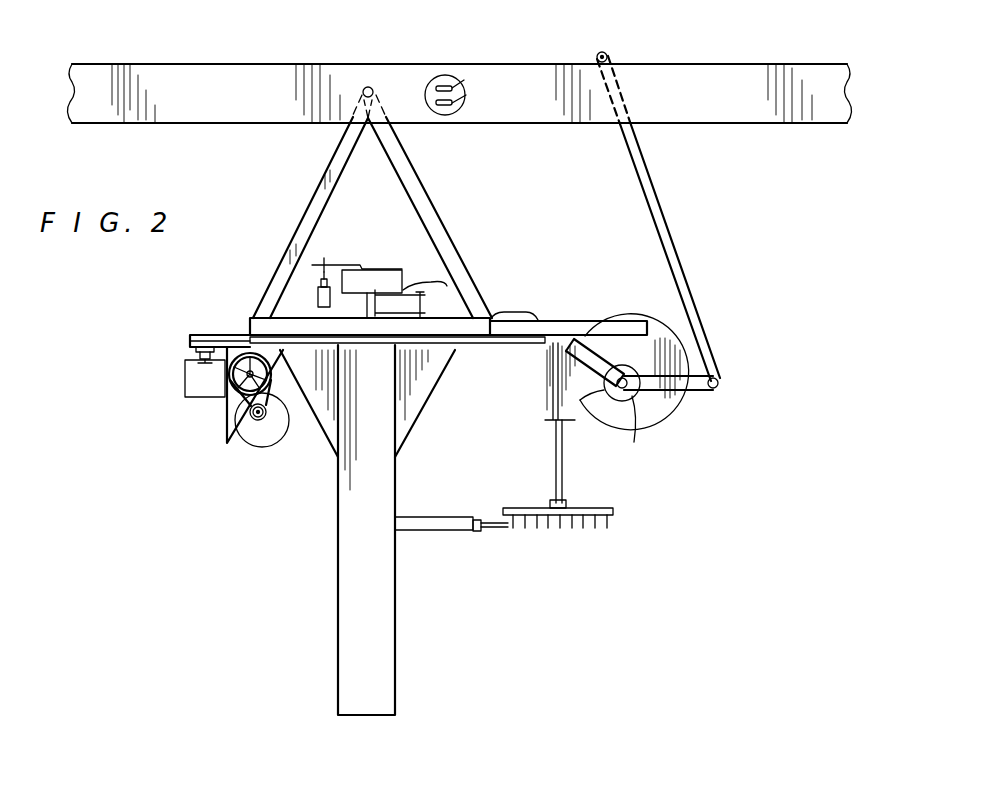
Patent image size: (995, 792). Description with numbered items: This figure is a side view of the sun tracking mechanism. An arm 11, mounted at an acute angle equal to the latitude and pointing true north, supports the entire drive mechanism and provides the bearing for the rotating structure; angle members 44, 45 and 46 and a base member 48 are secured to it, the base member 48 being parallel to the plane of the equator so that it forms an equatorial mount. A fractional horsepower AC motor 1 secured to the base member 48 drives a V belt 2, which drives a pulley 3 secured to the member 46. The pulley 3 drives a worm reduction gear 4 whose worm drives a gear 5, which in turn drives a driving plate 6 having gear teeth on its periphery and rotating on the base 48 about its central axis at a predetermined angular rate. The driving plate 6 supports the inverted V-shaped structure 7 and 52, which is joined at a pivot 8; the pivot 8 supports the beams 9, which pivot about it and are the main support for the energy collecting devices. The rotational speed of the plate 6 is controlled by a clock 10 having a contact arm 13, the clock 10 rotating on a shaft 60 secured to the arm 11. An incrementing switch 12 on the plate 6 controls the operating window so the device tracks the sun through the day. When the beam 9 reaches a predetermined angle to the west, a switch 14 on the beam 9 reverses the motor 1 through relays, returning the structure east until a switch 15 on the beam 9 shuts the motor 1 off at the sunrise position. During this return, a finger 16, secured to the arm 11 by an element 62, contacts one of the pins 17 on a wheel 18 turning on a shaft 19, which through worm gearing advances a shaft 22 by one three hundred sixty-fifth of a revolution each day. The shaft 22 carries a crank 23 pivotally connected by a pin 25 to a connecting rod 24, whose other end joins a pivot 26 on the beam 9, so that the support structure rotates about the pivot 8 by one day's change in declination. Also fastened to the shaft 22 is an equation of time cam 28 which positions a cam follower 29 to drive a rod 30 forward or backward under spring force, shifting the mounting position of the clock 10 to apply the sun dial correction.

The fractional horsepower AC motor 1 is at (264, 432).
The V belt 2 is at (270, 394).
The pulley 3 is at (242, 401).
The worm reduction gear 4 is at (185, 386).
The gear 5 is at (198, 345).
The driving plate 6 is at (240, 333).
The inverted V-shaped structure member 7 is at (416, 203).
The pivot 8 is at (368, 84).
The beam 9 is at (264, 74).
The clock 10 is at (400, 272).
The arm 11 is at (340, 509).
The incrementing switch 12 is at (318, 288).
The contact arm 13 is at (344, 264).
The switch 14 is at (447, 84).
The switch 15 is at (466, 98).
The finger 16 is at (504, 536).
The pin 17 is at (598, 526).
The wheel 18 is at (583, 526).
The shaft 19 is at (562, 478).
The shaft 22 is at (638, 424).
The crank 23 is at (700, 388).
The connecting rod 24 is at (664, 211).
The pin 25 is at (720, 383).
The pivot 26 is at (608, 56).
The equation of time cam 28 is at (598, 392).
The cam follower 29 is at (536, 312).
The cam follower rod 30 is at (503, 314).
The angle member 44 is at (320, 408).
The angle member 45 is at (414, 414).
The angle member 46 is at (232, 424).
The base member 48 is at (482, 344).
The inverted V-shaped structure member 52 is at (312, 203).
The shaft 60 is at (414, 304).
The element 62 is at (458, 526).